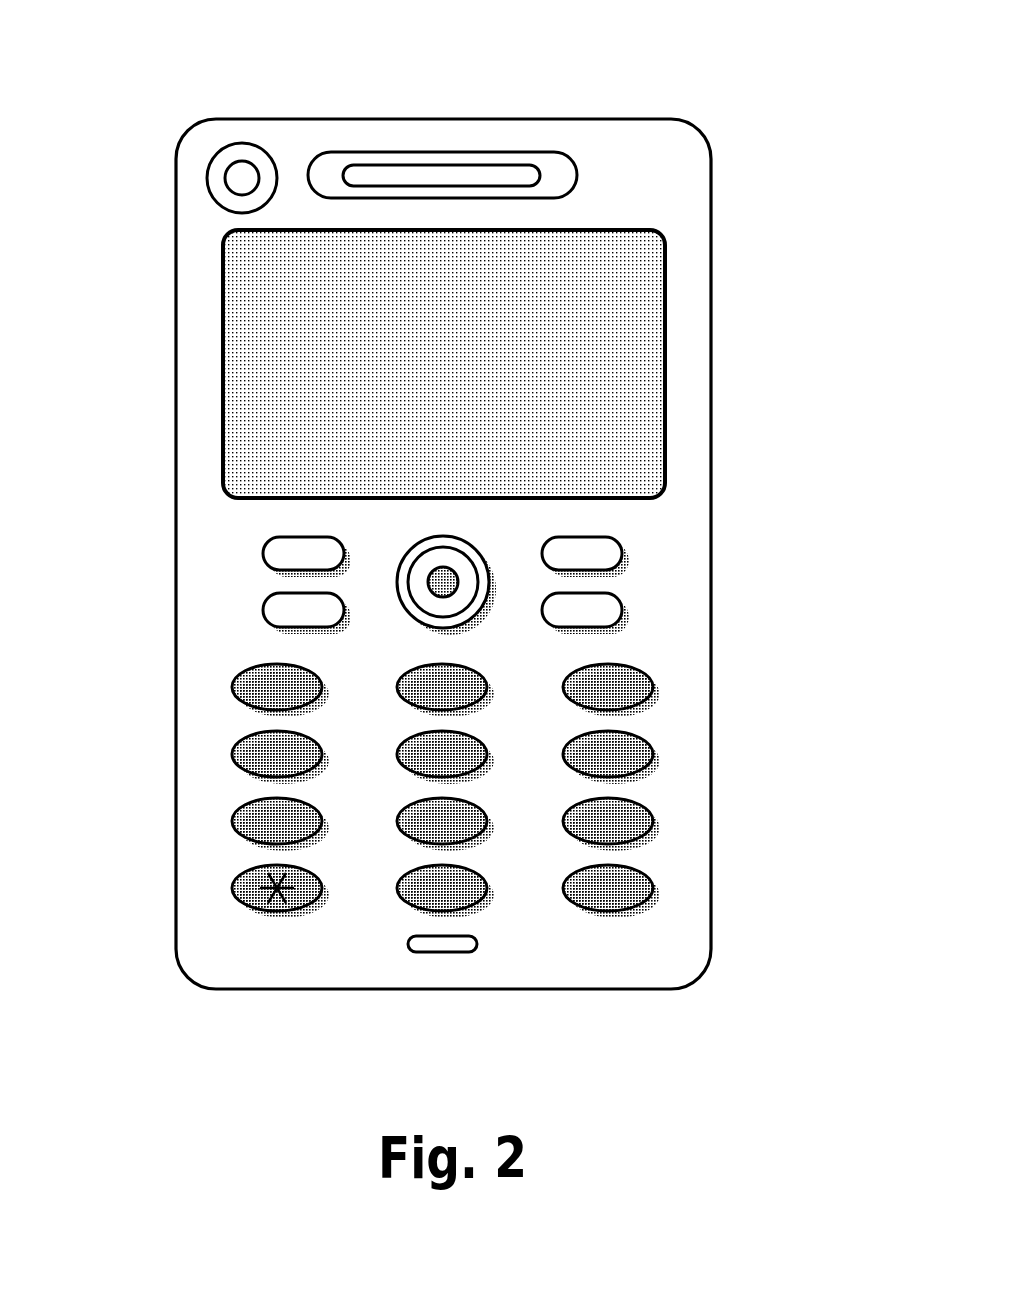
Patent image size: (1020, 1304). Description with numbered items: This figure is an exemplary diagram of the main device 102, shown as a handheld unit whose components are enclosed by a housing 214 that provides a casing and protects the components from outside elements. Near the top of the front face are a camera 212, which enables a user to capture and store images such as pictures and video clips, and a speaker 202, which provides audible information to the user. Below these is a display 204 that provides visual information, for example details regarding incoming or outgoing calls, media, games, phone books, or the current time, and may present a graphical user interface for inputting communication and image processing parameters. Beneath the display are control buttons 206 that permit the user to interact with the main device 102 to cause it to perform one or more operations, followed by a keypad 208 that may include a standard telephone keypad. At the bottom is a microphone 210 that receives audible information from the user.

The main device 102 is at (442, 120).
The speaker 202 is at (532, 152).
The display 204 is at (665, 364).
The control buttons 206 is at (578, 586).
The keypad 208 is at (571, 791).
The microphone 210 is at (453, 952).
The camera 212 is at (207, 179).
The housing 214 is at (176, 703).